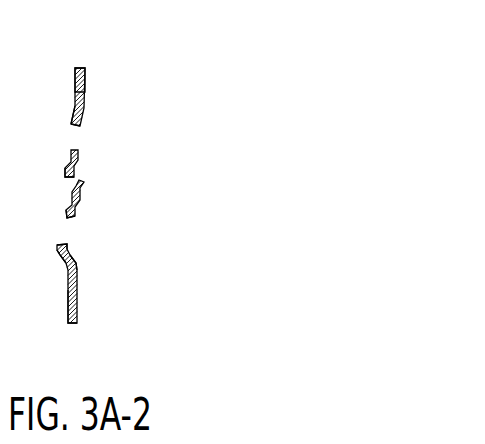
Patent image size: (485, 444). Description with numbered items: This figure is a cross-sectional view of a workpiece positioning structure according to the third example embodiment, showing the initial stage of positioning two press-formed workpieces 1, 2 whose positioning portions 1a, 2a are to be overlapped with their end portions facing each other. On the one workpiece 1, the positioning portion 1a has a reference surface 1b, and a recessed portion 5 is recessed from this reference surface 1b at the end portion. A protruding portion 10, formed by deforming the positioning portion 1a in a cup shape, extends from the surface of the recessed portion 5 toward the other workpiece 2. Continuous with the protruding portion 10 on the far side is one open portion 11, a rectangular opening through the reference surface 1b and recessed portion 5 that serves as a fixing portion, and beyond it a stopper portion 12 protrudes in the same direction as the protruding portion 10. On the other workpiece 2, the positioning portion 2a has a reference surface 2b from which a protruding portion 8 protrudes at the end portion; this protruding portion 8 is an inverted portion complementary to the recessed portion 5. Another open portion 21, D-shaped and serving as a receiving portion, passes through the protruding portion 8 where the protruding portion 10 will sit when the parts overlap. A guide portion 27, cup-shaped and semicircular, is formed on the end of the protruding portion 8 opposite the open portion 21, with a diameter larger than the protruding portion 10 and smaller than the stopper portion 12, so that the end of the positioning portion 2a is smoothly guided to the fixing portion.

The workpiece 1 is at (62, 322).
The positioning portion 1a is at (78, 272).
The reference surface 1b is at (66, 300).
The open portion 11 is at (63, 246).
The stopper portion 12 is at (58, 249).
The workpiece 2 is at (90, 66).
The positioning portion 2a is at (80, 155).
The reference surface 2b is at (75, 75).
The protruding portion 8 is at (73, 112).
The open portion 21 is at (82, 126).
The guide portion 27 is at (66, 169).
The recessed portion 5 is at (85, 195).
The protruding portion 10 is at (65, 208).